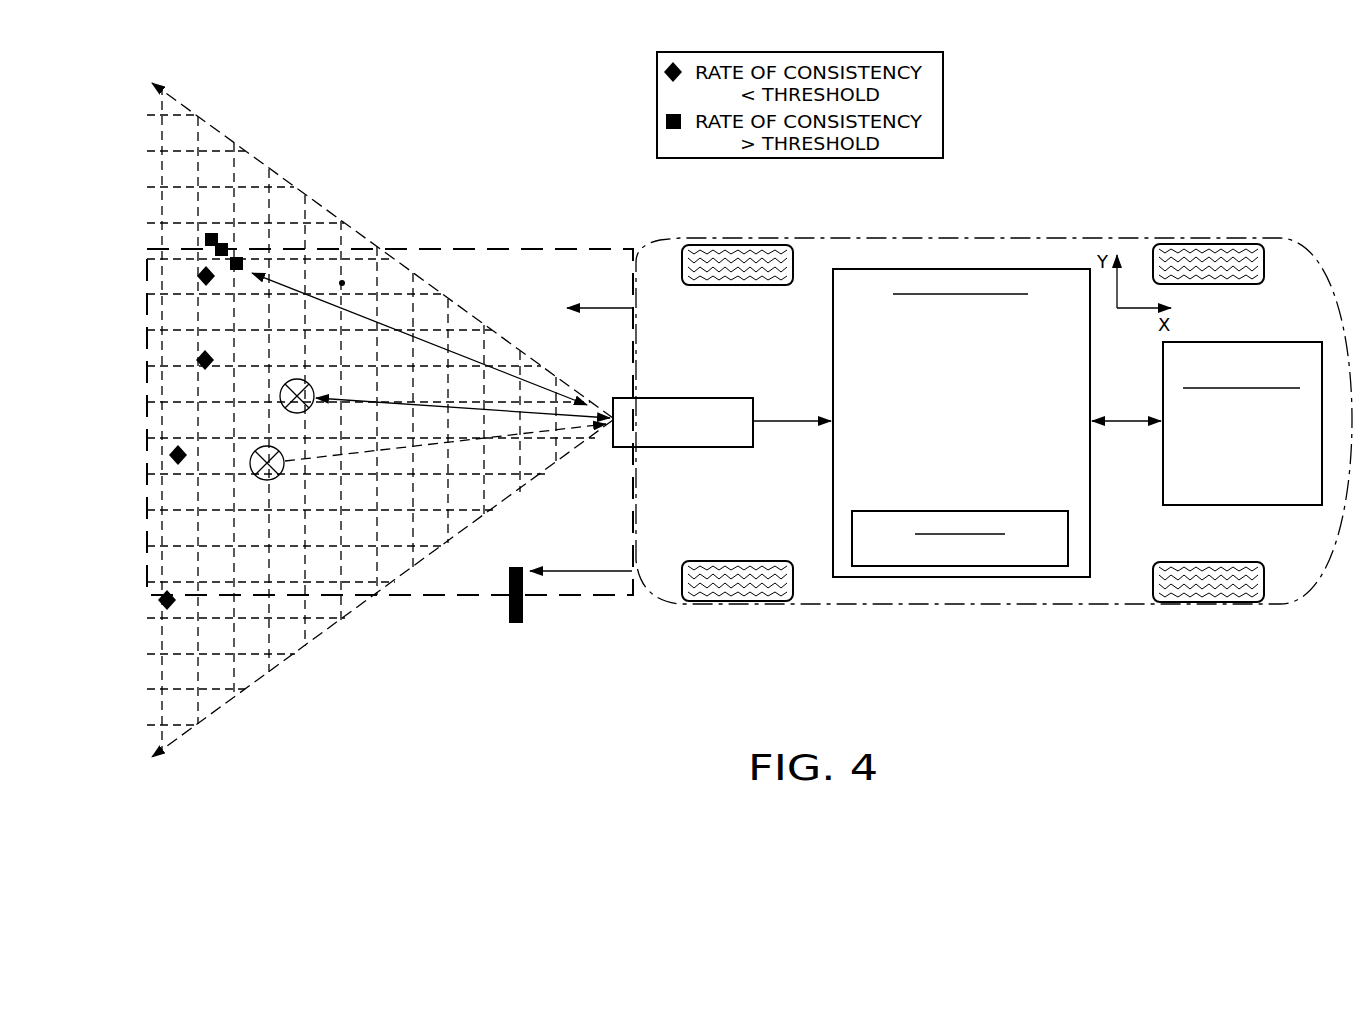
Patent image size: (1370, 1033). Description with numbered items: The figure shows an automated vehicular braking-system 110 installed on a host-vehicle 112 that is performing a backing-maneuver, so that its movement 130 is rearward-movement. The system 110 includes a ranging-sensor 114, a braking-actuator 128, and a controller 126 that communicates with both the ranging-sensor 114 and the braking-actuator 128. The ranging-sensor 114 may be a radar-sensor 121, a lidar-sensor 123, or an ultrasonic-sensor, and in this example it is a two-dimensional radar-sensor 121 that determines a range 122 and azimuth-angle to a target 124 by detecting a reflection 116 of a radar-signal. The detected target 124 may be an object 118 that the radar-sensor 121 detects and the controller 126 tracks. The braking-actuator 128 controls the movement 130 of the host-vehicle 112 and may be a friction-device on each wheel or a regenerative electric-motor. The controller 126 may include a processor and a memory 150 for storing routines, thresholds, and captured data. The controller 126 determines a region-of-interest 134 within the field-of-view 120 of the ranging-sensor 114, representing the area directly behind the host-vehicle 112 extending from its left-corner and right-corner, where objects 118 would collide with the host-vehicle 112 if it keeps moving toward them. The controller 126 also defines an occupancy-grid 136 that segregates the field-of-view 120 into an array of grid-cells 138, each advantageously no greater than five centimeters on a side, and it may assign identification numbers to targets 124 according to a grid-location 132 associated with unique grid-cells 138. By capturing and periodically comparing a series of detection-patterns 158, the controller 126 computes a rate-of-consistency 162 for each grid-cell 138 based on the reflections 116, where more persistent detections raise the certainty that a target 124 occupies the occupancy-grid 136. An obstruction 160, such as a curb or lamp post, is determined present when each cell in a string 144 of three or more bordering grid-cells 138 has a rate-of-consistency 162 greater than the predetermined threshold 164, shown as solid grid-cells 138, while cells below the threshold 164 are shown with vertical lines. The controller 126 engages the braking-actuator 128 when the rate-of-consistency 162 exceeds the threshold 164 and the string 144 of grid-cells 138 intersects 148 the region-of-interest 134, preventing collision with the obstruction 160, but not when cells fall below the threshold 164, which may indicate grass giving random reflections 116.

The automated vehicular braking-system 110 is at (1254, 194).
The host-vehicle 112 is at (1098, 606).
The ranging-sensor 114 is at (670, 397).
The reflection 116 is at (518, 443).
The object 118 is at (258, 446).
The field-of-view 120 is at (445, 520).
The radar-sensor 121 is at (700, 450).
The range 122 is at (455, 405).
The lidar-sensor 123 is at (636, 450).
The target 124 is at (303, 410).
The controller 126 is at (1018, 269).
The braking-actuator 128 is at (1188, 464).
The movement 130 is at (587, 307).
The grid-location 132 is at (342, 283).
The region-of-interest 134 is at (530, 265).
The occupancy-grid 136 is at (225, 670).
The grid-cell 138 is at (182, 702).
The string of grid-cells 144 is at (233, 217).
The intersection 148 is at (233, 262).
The memory 150 is at (860, 567).
The detection-patterns 158 is at (850, 328).
The obstruction 160 is at (257, 263).
The rate-of-consistency 162 is at (840, 432).
The predetermined threshold 164 is at (895, 482).